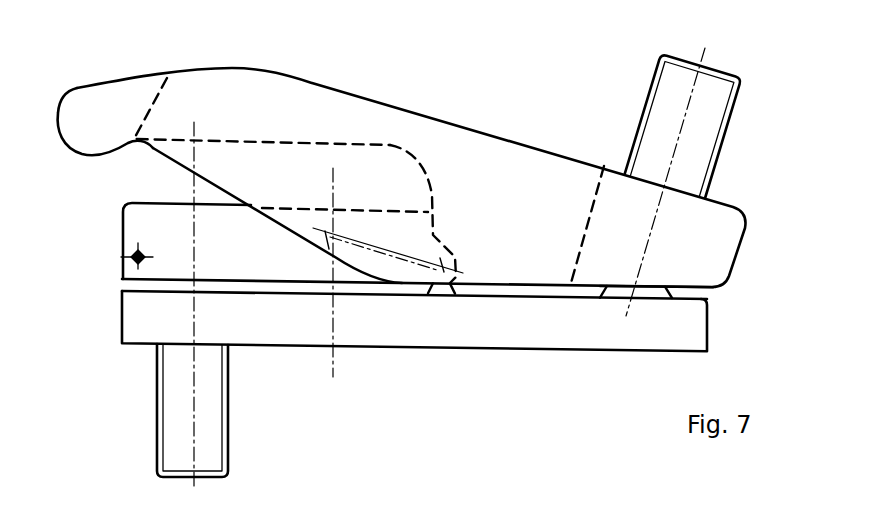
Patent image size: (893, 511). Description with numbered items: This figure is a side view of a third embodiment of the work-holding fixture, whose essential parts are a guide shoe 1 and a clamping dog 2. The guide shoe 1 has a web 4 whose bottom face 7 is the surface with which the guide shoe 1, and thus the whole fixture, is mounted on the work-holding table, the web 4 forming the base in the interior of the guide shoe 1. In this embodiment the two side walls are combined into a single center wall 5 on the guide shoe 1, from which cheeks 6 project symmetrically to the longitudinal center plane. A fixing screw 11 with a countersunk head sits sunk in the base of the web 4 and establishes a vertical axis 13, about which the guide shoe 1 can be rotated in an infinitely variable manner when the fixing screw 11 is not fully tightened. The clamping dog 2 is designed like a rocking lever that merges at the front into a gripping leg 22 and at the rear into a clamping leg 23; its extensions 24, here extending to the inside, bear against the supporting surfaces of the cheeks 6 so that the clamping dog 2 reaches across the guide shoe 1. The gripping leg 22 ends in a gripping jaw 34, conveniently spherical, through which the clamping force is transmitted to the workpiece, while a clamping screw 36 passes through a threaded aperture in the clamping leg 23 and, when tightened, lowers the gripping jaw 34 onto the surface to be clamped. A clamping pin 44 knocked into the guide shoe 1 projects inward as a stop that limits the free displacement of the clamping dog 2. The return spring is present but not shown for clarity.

The guide shoe 1 is at (417, 349).
The clamping dog 2 is at (406, 103).
The web 4 is at (642, 330).
The center wall 5 is at (267, 259).
The cheeks 6 is at (157, 182).
The bottom face 7 is at (590, 352).
The fixing screw 11 is at (205, 387).
The vertical axis 13 is at (190, 408).
The gripping leg 22 is at (243, 108).
The clamping leg 23 is at (497, 188).
The extensions 24 is at (413, 225).
The gripping jaw 34 is at (85, 156).
The clamping screw 36 is at (740, 107).
The clamping pin 44 is at (128, 252).